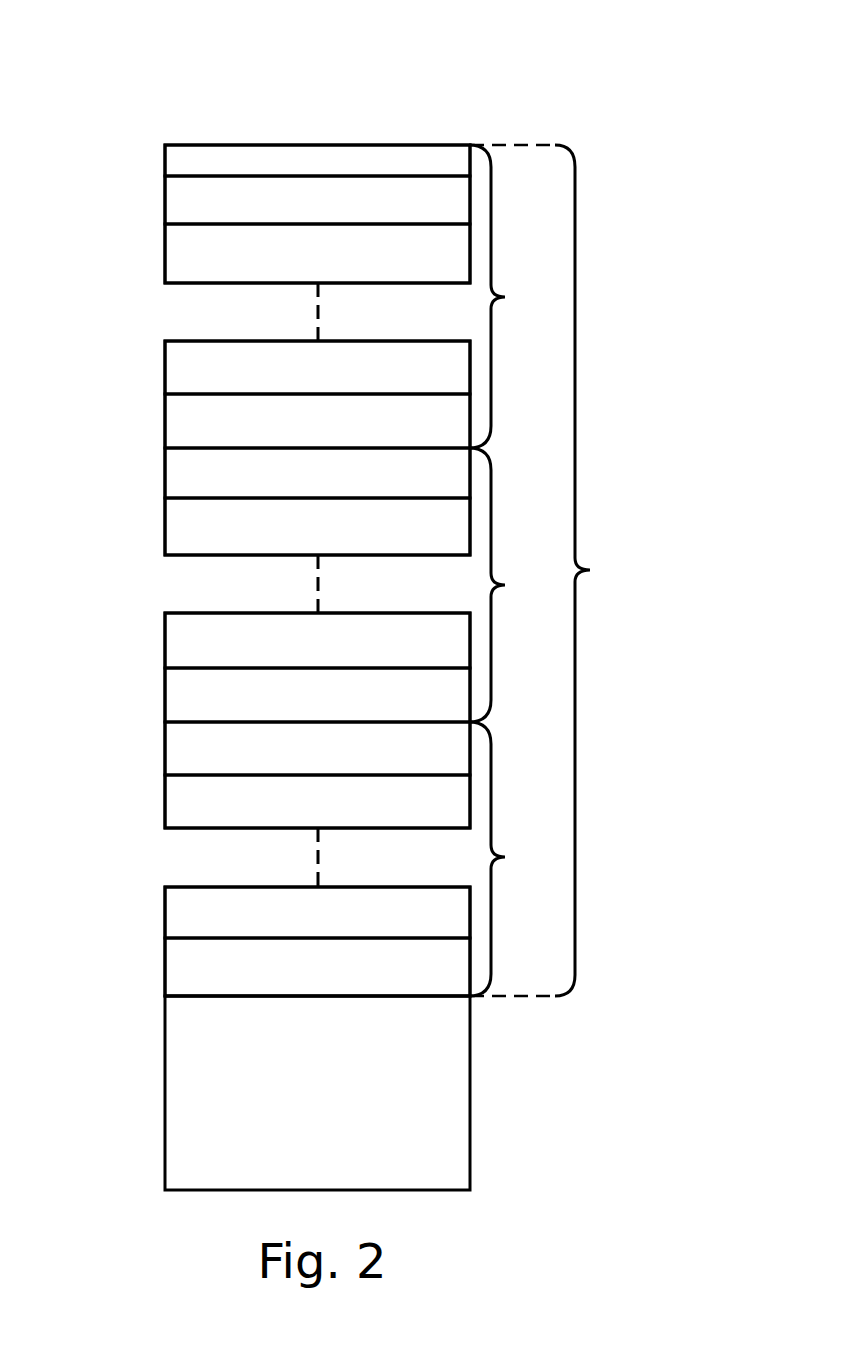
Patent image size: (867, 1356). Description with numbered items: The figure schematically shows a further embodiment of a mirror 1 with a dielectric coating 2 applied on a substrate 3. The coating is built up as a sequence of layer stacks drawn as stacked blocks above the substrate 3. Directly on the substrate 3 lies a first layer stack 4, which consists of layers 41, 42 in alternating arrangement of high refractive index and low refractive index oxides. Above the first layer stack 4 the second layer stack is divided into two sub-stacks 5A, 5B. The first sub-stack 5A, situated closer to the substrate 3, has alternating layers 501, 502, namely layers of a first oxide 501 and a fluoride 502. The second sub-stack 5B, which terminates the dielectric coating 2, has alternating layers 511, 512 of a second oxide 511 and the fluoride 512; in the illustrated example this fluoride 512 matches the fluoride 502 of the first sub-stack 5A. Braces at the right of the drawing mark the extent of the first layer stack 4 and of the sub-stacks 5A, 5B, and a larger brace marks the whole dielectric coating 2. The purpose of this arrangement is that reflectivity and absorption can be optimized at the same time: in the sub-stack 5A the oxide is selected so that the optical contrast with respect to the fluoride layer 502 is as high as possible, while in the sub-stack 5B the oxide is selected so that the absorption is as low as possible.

The mirror 1 is at (446, 110).
The dielectric coating 2 is at (544, 570).
The substrate 3 is at (310, 1094).
The first layer stack 4 is at (501, 859).
The first sub-stack 5A is at (508, 585).
The second sub-stack 5B is at (508, 296).
The layer 41 is at (164, 800).
The layer 42 is at (164, 745).
The first oxide layer 501 is at (164, 525).
The fluoride layer 502 is at (164, 472).
The second oxide layer 511 is at (164, 163).
The fluoride layer 512 is at (164, 203).